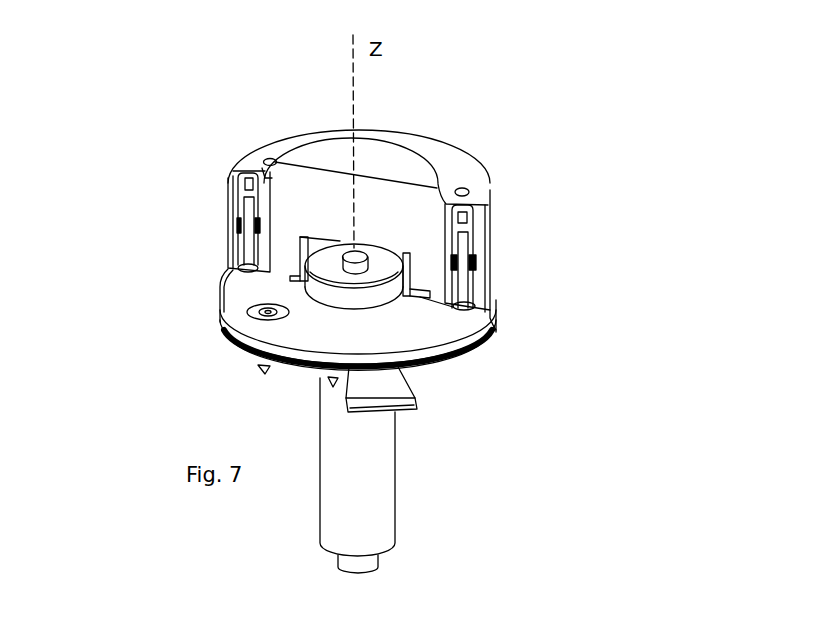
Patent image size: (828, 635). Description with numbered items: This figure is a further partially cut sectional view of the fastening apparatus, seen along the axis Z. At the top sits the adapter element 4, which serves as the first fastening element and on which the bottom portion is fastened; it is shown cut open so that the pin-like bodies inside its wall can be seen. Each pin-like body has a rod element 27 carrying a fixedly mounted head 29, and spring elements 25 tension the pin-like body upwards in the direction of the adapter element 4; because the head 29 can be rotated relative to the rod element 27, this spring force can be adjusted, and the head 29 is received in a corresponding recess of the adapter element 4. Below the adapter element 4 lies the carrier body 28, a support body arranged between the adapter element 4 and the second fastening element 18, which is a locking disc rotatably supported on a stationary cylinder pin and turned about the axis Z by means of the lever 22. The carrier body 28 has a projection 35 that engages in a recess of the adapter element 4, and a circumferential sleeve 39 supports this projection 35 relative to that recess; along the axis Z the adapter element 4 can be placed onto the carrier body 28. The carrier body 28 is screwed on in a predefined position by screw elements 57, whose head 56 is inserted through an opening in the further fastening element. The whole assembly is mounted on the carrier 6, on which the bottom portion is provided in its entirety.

The adapter element 4 is at (443, 157).
The carrier 6 is at (357, 474).
The second fastening element 18 is at (445, 361).
The lever 22 is at (415, 406).
The spring elements 25 is at (477, 260).
The rod element 27 is at (473, 282).
The carrier body 28 is at (495, 326).
The head 29 is at (240, 195).
The projection 35 is at (317, 277).
The circumferential sleeve 39 is at (305, 252).
The head 56 is at (267, 313).
The screw element 57 is at (262, 367).